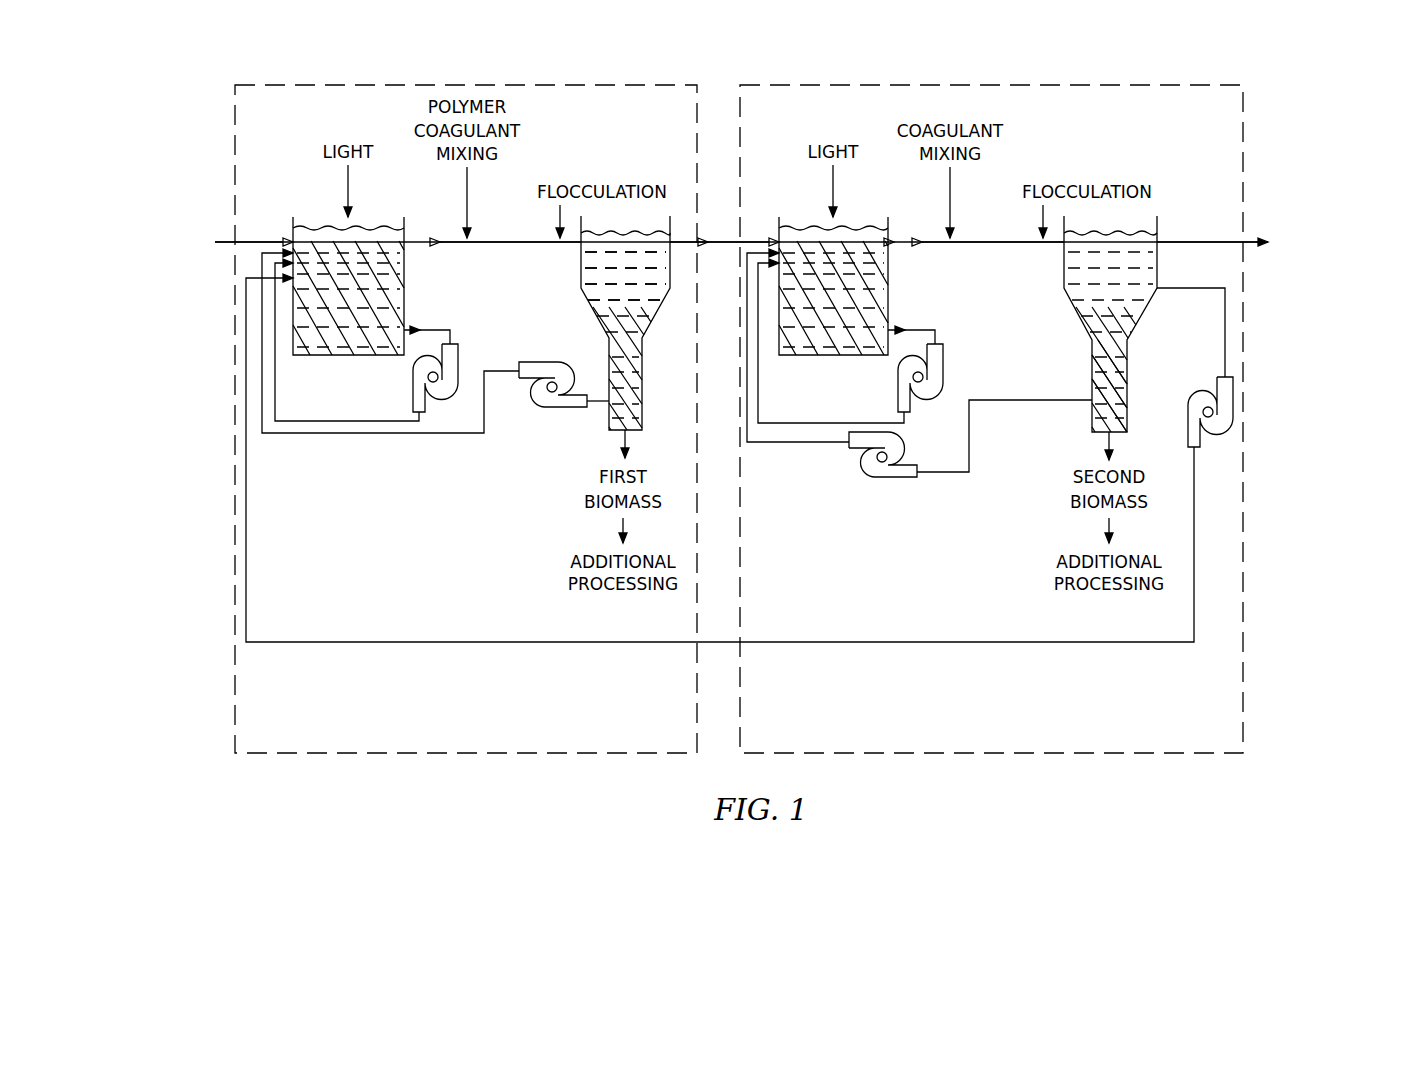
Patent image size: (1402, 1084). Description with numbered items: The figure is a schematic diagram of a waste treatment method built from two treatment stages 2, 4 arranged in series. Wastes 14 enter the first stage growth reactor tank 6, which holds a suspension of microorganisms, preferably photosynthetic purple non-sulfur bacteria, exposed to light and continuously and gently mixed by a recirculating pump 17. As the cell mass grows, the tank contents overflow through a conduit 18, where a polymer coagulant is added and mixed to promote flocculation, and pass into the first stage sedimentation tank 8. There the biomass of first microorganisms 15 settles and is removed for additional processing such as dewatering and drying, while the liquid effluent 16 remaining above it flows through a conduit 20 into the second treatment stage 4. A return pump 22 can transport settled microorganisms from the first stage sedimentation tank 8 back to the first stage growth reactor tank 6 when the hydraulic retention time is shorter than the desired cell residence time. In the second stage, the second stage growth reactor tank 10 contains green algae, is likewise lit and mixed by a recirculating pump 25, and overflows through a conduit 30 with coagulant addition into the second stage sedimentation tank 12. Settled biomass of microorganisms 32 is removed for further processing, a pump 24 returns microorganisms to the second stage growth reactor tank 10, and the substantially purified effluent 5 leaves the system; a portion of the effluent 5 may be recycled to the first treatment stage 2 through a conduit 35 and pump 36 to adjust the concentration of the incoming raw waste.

The first treatment stage 2 is at (618, 115).
The second treatment stage 4 is at (1088, 115).
The effluent 5 is at (1260, 254).
The first stage growth reactor tank 6 is at (400, 283).
The first stage sedimentation tank 8 is at (581, 262).
The second stage growth reactor tank 10 is at (880, 282).
The second stage sedimentation tank 12 is at (1064, 262).
The wastes 14 is at (215, 254).
The biomass of first microorganisms 15 is at (607, 323).
The liquid effluent 16 is at (656, 268).
The recirculating pump 17 is at (459, 363).
The conduit 18 is at (495, 240).
The conduit 20 is at (725, 240).
The pump 22 is at (566, 410).
The pump 24 is at (880, 476).
The recirculating pump 25 is at (943, 358).
The conduit 30 is at (978, 240).
The biomass of microorganisms 32 is at (1090, 323).
The conduit 35 is at (896, 640).
The pump 36 is at (1200, 402).